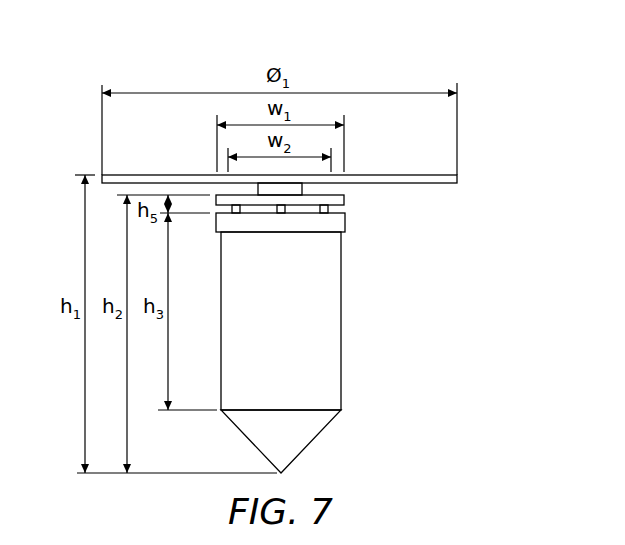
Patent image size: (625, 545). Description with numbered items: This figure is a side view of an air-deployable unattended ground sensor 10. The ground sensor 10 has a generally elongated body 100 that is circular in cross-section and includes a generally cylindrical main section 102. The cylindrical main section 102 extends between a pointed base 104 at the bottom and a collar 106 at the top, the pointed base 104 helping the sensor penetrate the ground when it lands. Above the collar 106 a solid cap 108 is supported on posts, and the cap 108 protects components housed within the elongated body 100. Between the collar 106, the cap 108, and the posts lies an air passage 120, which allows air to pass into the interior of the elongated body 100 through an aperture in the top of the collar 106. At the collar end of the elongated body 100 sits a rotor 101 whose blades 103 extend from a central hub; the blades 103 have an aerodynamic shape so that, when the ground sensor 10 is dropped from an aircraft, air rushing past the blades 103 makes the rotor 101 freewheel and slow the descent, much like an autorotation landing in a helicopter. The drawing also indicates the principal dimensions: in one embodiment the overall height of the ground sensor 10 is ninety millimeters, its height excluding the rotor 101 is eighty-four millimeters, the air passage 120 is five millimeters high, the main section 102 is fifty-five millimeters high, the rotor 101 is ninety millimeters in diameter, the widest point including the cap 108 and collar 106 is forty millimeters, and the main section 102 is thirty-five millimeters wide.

The ground sensor 10 is at (458, 222).
The elongated body 100 is at (381, 277).
The rotor 101 is at (391, 154).
The cylindrical main section 102 is at (341, 318).
The blades 103 is at (457, 178).
The pointed base 104 is at (312, 440).
The collar 106 is at (345, 224).
The cap 108 is at (344, 197).
The air passage 120 is at (345, 208).